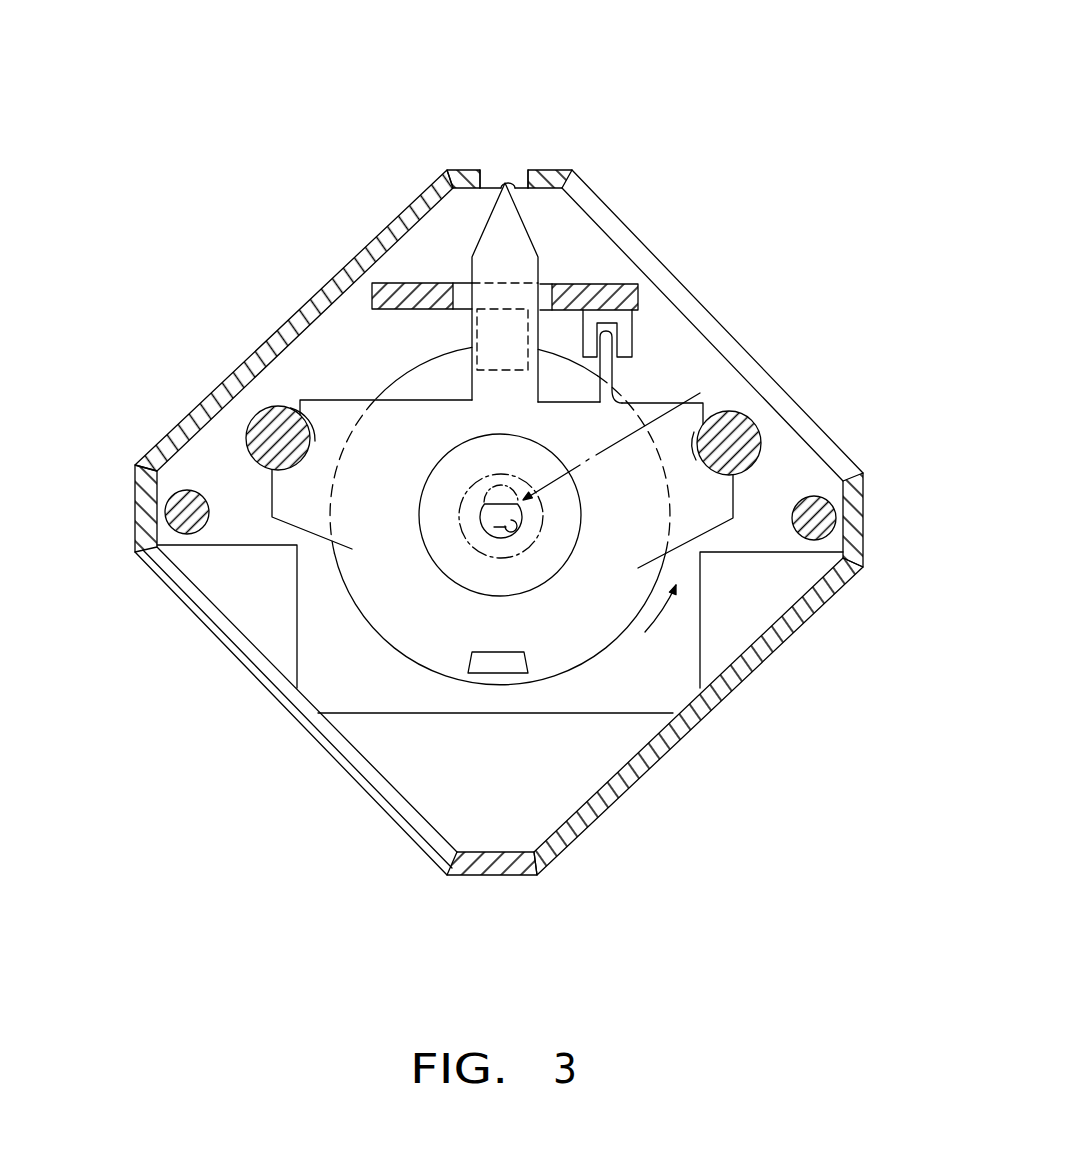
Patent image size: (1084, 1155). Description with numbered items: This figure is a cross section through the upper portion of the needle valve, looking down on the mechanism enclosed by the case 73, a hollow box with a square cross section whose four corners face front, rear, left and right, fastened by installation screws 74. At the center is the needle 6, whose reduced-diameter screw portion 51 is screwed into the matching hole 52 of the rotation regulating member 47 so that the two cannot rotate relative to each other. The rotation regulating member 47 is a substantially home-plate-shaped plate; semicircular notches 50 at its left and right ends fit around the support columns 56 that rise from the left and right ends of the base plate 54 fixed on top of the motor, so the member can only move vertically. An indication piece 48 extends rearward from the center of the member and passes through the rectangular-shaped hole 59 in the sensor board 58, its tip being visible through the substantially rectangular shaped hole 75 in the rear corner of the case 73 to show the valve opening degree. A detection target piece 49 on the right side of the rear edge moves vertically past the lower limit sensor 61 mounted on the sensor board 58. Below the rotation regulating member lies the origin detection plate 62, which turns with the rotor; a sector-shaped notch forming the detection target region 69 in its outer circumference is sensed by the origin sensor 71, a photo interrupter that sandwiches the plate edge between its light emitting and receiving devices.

The needle 6 is at (700, 393).
The rotation regulating member 47 is at (745, 496).
The indication piece 48 is at (529, 228).
The detection target piece 49 is at (613, 370).
The notches 50 is at (277, 400).
The reduced-diameter screw portion 51 is at (486, 531).
The hole 52 is at (517, 530).
The base plate 54 is at (696, 648).
The support columns 56 is at (246, 436).
The sensor board 58 is at (636, 283).
The rectangular-shaped hole 59 is at (467, 283).
The lower limit sensor 61 is at (633, 328).
The origin detection plate 62 is at (346, 599).
The detection target region 69 is at (492, 674).
The origin sensor 71 is at (477, 322).
The case 73 is at (575, 168).
The installation screws 74 is at (170, 512).
The substantially rectangular shaped hole 75 is at (490, 170).